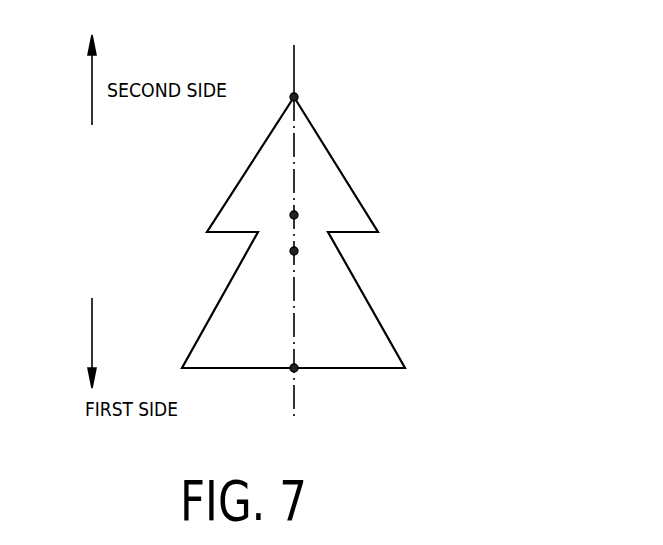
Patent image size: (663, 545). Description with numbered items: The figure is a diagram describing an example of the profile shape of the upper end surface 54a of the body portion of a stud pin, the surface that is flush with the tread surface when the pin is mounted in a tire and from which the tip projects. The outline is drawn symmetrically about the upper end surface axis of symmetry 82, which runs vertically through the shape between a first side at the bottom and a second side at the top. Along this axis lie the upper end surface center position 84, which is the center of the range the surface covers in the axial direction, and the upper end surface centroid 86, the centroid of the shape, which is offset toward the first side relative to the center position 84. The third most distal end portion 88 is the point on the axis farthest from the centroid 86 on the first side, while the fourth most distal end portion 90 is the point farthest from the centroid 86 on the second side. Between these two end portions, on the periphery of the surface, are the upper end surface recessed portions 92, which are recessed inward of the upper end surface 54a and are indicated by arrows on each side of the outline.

The upper end surface axis of symmetry 82 is at (296, 59).
The fourth most distal end portion 90 is at (298, 94).
The upper end surface 54a is at (318, 176).
The upper end surface recessed portion 92 is at (228, 242).
The upper end surface center position 84 is at (298, 217).
The upper end surface centroid 86 is at (298, 253).
The third most distal end portion 88 is at (297, 371).